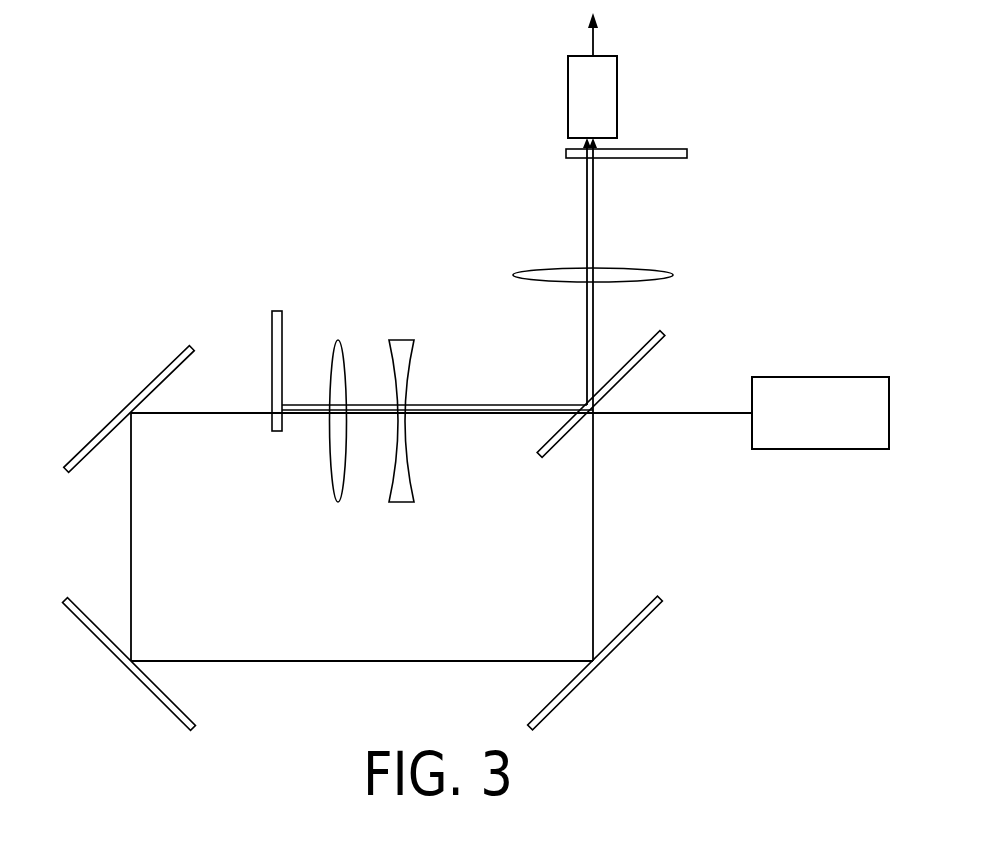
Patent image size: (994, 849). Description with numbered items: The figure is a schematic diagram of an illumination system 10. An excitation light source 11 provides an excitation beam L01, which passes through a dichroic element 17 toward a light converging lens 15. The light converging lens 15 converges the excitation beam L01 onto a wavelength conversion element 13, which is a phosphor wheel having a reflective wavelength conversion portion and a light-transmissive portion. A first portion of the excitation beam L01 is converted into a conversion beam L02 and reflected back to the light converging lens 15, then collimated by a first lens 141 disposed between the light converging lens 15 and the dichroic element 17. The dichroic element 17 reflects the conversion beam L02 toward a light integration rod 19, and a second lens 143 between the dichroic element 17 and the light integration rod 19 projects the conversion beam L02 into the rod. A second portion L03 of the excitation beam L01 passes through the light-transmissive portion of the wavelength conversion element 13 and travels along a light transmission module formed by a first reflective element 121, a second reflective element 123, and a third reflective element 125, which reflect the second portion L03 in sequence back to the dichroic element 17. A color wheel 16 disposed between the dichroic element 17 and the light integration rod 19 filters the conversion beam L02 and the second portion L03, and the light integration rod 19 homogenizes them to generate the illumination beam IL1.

The illumination system 10 is at (140, 146).
The excitation light source 11 is at (819, 449).
The wavelength conversion element 13 is at (276, 311).
The light converging lens 15 is at (341, 360).
The first lens 141 is at (402, 348).
The second lens 143 is at (636, 272).
The color wheel 16 is at (670, 152).
The dichroic element 17 is at (665, 342).
The light integration rod 19 is at (620, 90).
The first reflective element 121 is at (170, 372).
The second reflective element 123 is at (165, 708).
The third reflective element 125 is at (648, 622).
The excitation beam L01 is at (681, 415).
The conversion beam L02 is at (586, 197).
The second portion of the excitation beam L03 is at (594, 213).
The illumination beam IL1 is at (600, 40).